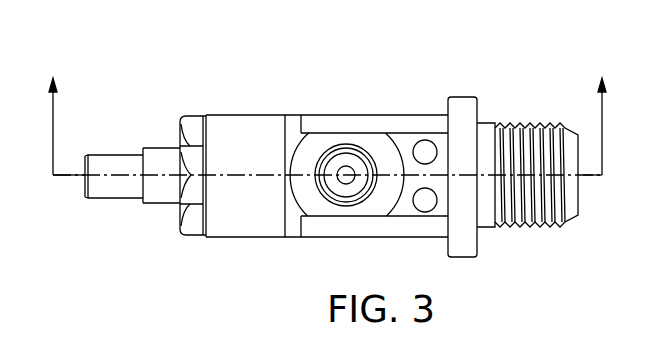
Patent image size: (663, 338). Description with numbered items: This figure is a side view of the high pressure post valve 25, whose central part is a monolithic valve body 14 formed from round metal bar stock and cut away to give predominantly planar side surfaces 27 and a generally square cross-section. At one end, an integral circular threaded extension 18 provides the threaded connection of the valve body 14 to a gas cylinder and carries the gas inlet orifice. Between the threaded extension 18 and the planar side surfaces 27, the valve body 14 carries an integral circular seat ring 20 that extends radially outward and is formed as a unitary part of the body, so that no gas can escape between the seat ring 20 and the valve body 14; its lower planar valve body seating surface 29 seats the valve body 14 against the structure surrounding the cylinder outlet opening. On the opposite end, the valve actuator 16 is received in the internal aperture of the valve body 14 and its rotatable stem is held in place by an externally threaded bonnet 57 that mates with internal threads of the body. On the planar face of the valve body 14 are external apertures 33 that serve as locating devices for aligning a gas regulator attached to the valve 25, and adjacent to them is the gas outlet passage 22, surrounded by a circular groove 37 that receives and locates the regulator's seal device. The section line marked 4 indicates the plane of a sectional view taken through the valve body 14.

The section line 4- 4 is at (328, 110).
The valve body 14 is at (235, 230).
The valve actuator 16 is at (112, 152).
The threaded extension 18 is at (543, 215).
The seat ring 20 is at (458, 96).
The gas outlet passage 22 is at (345, 170).
The post valve 25 is at (246, 66).
The planar side surfaces 27 is at (310, 115).
The valve body seating surface 29 is at (480, 107).
The external apertures 33 is at (423, 198).
The circular groove 37 is at (358, 150).
The threaded bonnet 57 is at (194, 130).